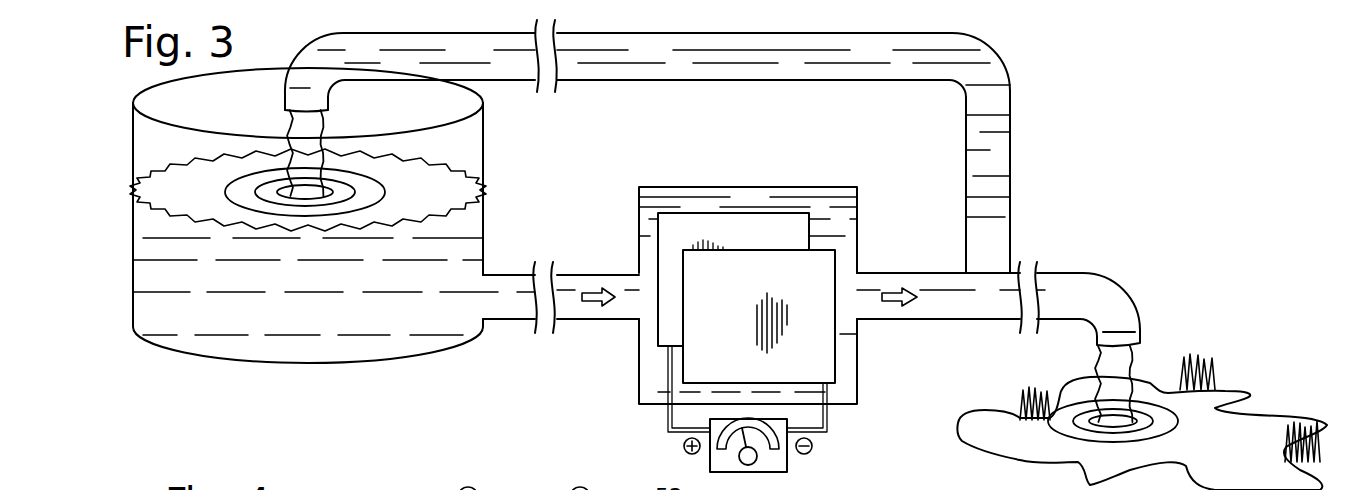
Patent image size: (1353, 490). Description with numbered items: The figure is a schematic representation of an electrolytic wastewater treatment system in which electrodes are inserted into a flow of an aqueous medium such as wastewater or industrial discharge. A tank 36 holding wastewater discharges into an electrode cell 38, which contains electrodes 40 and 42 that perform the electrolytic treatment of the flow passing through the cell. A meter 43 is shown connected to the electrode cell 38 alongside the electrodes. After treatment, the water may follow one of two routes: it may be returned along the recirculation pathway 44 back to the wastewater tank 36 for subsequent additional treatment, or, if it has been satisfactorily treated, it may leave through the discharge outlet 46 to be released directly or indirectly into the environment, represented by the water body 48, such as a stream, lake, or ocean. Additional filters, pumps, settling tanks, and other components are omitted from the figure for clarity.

The tank 36 is at (483, 123).
The electrode cell 38 is at (857, 375).
The electrode 40 is at (771, 285).
The electrode 42 is at (771, 245).
The meter 43 is at (787, 458).
The recirculation pathway 44 is at (745, 80).
The discharge outlet 46 is at (1140, 338).
The water body 48 is at (1248, 468).